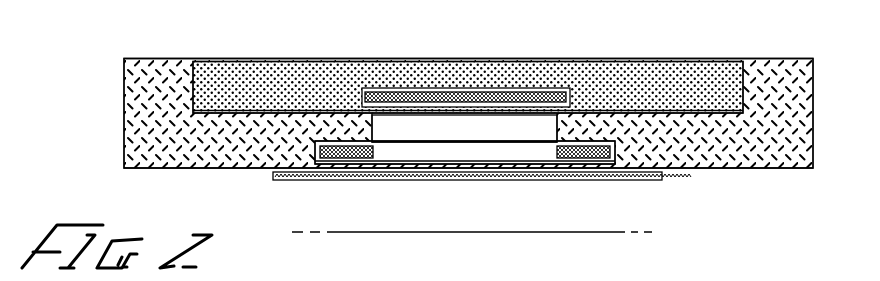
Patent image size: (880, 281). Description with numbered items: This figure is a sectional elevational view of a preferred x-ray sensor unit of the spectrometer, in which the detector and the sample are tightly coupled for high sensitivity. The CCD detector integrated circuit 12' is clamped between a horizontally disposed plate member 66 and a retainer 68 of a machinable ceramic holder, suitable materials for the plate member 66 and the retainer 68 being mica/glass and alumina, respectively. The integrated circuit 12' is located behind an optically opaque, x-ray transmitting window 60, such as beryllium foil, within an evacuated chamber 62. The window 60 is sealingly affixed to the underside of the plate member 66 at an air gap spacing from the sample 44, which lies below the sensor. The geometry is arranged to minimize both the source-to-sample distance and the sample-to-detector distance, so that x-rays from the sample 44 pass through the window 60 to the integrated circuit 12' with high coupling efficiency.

The CCD detector integrated circuit 12' is at (466, 67).
The retainer 68 is at (680, 93).
The plate member 66 is at (748, 152).
The evacuated chamber 62 is at (502, 138).
The window 60 is at (563, 180).
The sample 44 is at (335, 232).